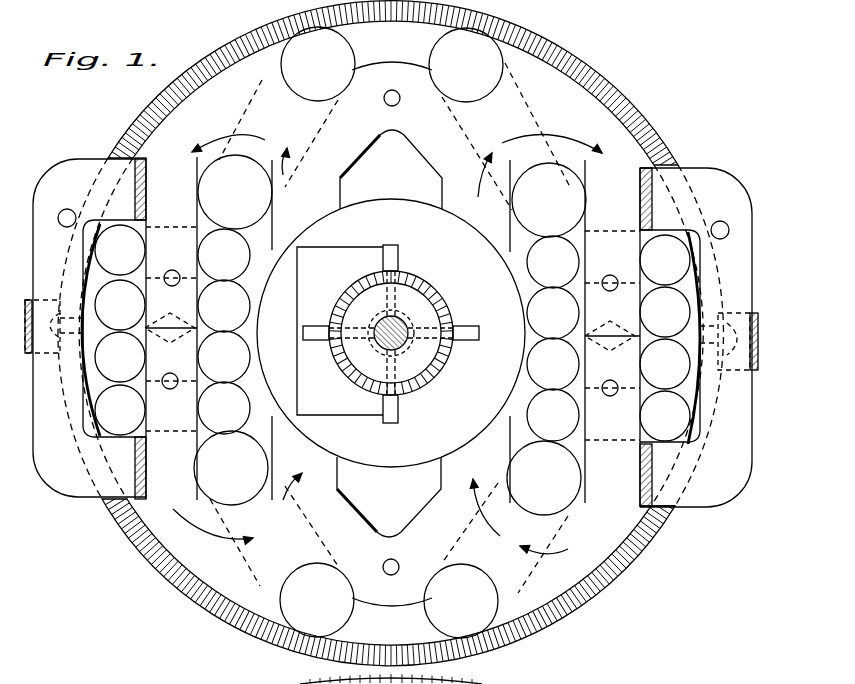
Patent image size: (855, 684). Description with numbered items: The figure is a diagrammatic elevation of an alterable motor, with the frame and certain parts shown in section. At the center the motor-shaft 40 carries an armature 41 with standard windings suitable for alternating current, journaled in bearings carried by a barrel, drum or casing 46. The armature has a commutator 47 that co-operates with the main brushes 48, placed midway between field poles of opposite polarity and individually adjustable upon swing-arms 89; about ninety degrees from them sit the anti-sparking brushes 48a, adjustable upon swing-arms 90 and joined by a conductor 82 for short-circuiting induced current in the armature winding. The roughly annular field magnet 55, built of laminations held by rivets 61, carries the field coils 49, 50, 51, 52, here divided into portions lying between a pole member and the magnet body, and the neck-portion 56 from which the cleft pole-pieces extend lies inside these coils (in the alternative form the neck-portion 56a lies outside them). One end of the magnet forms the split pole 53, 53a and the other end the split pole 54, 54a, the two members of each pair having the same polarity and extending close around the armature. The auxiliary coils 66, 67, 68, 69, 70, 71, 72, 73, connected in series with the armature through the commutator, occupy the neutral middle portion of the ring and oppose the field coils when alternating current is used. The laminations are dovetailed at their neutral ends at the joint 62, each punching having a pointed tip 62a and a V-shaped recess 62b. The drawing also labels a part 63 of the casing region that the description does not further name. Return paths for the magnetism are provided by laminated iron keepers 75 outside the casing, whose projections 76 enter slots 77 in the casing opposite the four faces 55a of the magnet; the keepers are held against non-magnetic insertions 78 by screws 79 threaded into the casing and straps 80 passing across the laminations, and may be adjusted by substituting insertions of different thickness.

The motor-shaft 40 is at (377, 321).
The armature 41 is at (505, 410).
The casing 46 is at (588, 60).
The commutator 47 is at (432, 300).
The main brushes 48 is at (313, 341).
The anti-sparking brushes 48a is at (399, 262).
The field coil 49 is at (549, 200).
The field coil 50 is at (235, 192).
The field coil 51 is at (544, 478).
The field coil 52 is at (231, 468).
The pole-piece 53 is at (350, 263).
The pole-piece 53a is at (529, 328).
The pole-piece 54 is at (387, 538).
The pole-piece 54a is at (484, 490).
The magnet 55 is at (150, 517).
The faces 55a is at (147, 182).
The neck-portion 56 is at (183, 108).
The neck-portion 56a is at (375, 675).
The rivets 61 is at (66, 210).
The valve 62 is at (616, 331).
The pointed tip 62a is at (168, 341).
The V-shaped recess 62b is at (606, 326).
The cylinder wall 63 is at (612, 90).
The auxiliary coil 66 is at (553, 364).
The auxiliary coil 67 is at (553, 313).
The auxiliary coil 68 is at (553, 262).
The auxiliary coil 69 is at (553, 415).
The auxiliary coil 70 is at (224, 408).
The auxiliary coil 71 is at (224, 255).
The auxiliary coil 72 is at (224, 306).
The auxiliary coil 73 is at (224, 357).
The keepers 75 is at (752, 437).
The projections 76 is at (672, 506).
The slots 77 is at (700, 440).
The non-magnetic insertions 78 is at (641, 188).
The screws 79 is at (730, 355).
The straps 80 is at (758, 360).
The conductor 82 is at (352, 418).
The swing-arms 89 is at (391, 343).
The swing-arms 90 is at (395, 305).